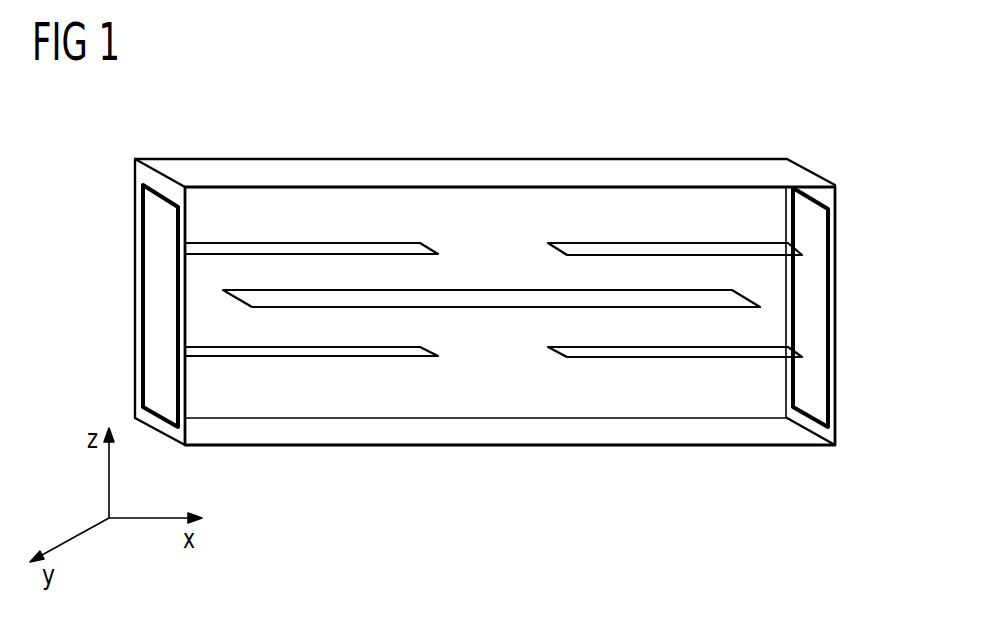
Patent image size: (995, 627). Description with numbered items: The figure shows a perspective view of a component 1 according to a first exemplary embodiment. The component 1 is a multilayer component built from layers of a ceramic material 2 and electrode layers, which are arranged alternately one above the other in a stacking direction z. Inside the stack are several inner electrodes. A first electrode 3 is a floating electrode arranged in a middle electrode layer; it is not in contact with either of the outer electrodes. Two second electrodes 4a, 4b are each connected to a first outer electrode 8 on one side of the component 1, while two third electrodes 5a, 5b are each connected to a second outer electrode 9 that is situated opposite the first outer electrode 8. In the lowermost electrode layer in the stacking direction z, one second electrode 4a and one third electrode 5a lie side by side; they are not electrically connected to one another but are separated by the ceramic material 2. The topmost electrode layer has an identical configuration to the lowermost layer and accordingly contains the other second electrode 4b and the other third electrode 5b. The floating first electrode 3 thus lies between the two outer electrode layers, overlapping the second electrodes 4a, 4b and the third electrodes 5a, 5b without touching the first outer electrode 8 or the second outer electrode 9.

The component 1 is at (752, 103).
The ceramic material 2 is at (772, 222).
The first electrode 3 is at (502, 300).
The second electrode 4a is at (320, 353).
The second electrode 4b is at (318, 250).
The third electrode 5a is at (685, 352).
The third electrode 5b is at (673, 248).
The first outer electrode 8 is at (140, 297).
The second outer electrode 9 is at (830, 298).